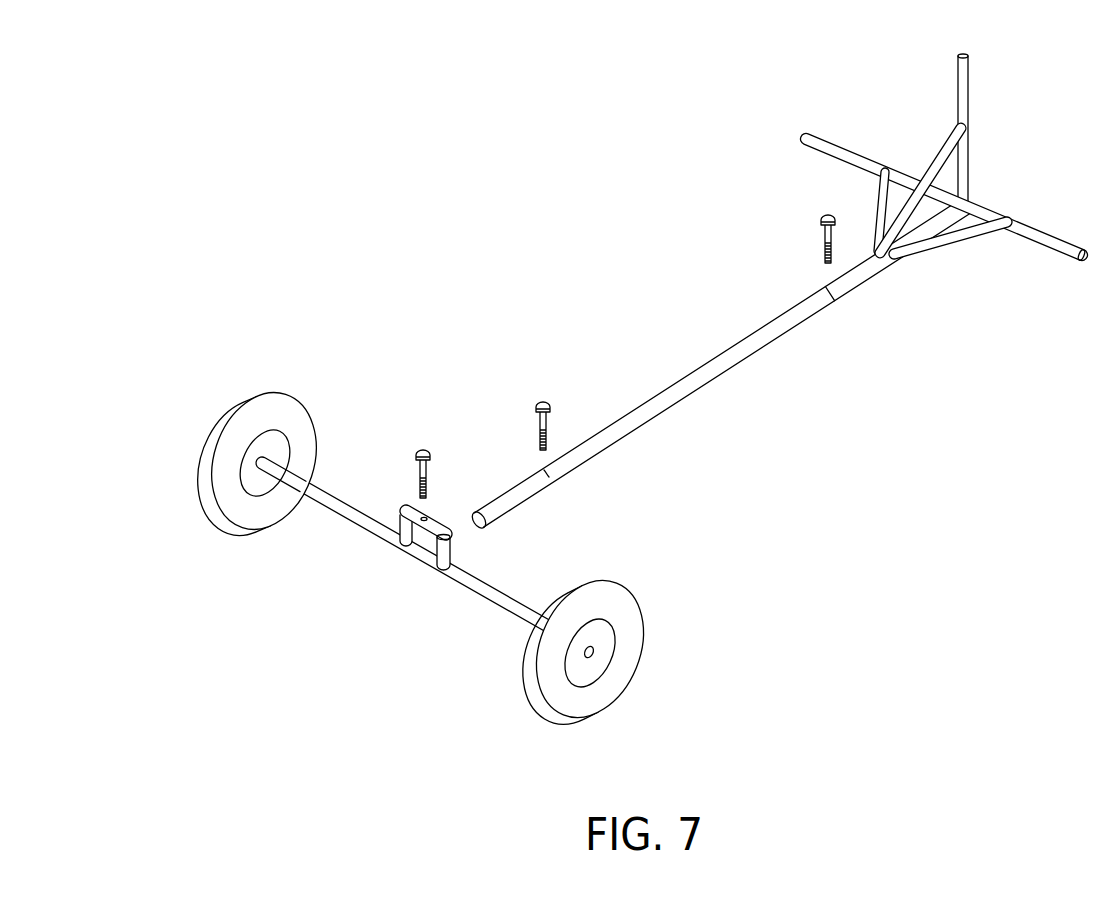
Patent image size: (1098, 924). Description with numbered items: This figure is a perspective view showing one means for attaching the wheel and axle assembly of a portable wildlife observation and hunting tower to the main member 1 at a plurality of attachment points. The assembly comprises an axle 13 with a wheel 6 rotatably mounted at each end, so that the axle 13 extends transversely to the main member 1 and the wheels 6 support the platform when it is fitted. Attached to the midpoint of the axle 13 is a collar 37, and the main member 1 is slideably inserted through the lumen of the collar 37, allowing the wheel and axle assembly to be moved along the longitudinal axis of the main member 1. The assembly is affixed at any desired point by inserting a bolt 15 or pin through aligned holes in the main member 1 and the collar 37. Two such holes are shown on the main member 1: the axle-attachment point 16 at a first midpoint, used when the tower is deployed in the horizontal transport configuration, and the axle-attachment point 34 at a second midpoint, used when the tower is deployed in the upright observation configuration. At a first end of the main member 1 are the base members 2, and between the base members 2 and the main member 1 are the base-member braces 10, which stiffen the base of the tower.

The main member 1 is at (715, 357).
The base members 2 is at (969, 66).
The wheel 6 is at (201, 484).
The base-member braces 10 is at (942, 148).
The axle 13 is at (479, 596).
The bolt 15 is at (424, 447).
The axle-attachment point 16 is at (836, 296).
The axle-attachment point 34 is at (548, 482).
The collar 37 is at (451, 546).